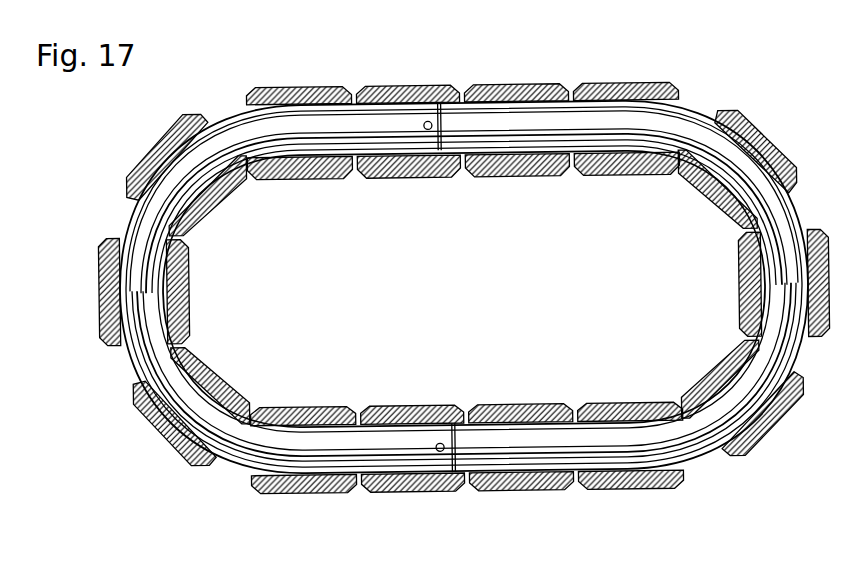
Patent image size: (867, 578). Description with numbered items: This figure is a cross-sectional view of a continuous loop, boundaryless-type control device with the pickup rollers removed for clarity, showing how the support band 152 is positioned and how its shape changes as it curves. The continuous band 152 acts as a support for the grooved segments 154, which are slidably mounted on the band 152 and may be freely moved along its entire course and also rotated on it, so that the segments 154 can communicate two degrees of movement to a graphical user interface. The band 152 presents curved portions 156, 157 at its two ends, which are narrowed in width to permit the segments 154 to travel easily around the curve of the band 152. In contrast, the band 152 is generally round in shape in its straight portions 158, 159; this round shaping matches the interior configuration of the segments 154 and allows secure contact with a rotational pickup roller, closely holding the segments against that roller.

The continuous band 152 is at (700, 463).
The grooved segments 154 is at (683, 482).
The curved portion 156 is at (133, 367).
The curved portion 157 is at (807, 348).
The straight portion 158 is at (418, 403).
The straight portion 159 is at (422, 178).